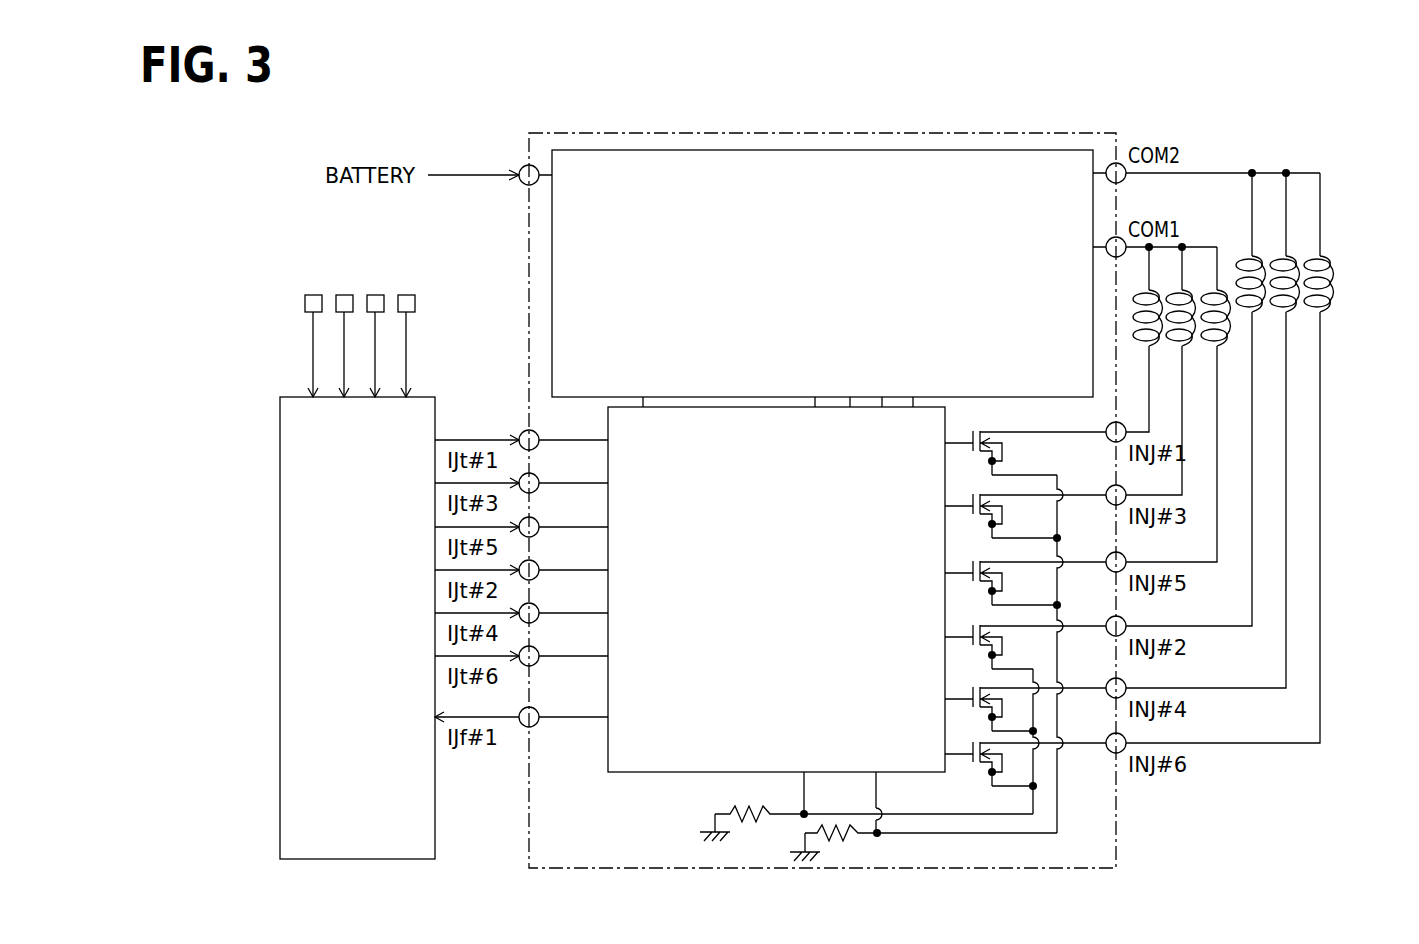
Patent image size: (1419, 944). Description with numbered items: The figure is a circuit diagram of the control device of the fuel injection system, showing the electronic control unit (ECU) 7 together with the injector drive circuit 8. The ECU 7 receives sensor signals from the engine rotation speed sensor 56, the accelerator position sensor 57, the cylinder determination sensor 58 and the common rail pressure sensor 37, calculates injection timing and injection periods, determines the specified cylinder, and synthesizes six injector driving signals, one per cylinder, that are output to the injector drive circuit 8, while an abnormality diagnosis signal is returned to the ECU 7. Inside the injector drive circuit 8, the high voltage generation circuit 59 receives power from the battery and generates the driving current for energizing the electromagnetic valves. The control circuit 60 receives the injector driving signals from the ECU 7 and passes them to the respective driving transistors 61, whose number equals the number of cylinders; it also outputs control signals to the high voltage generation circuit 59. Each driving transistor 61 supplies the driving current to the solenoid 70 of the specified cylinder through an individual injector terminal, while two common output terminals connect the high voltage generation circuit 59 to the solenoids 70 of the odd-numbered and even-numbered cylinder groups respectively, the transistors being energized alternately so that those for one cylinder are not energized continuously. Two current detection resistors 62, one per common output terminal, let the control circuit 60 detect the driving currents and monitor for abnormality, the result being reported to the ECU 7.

The electronic control unit (ECU) 7 is at (280, 470).
The injector drive circuit 8 is at (1086, 130).
The common rail pressure sensor 37 is at (406, 296).
The engine rotation speed sensor 56 is at (374, 296).
The accelerator position sensor 57 is at (340, 296).
The cylinder determination sensor 58 is at (308, 296).
The high voltage generation circuit 59 is at (570, 168).
The control circuit 60 is at (645, 773).
The driving transistors 61 is at (968, 751).
The current detection resistors 62 is at (843, 838).
The solenoids 70 is at (1323, 312).